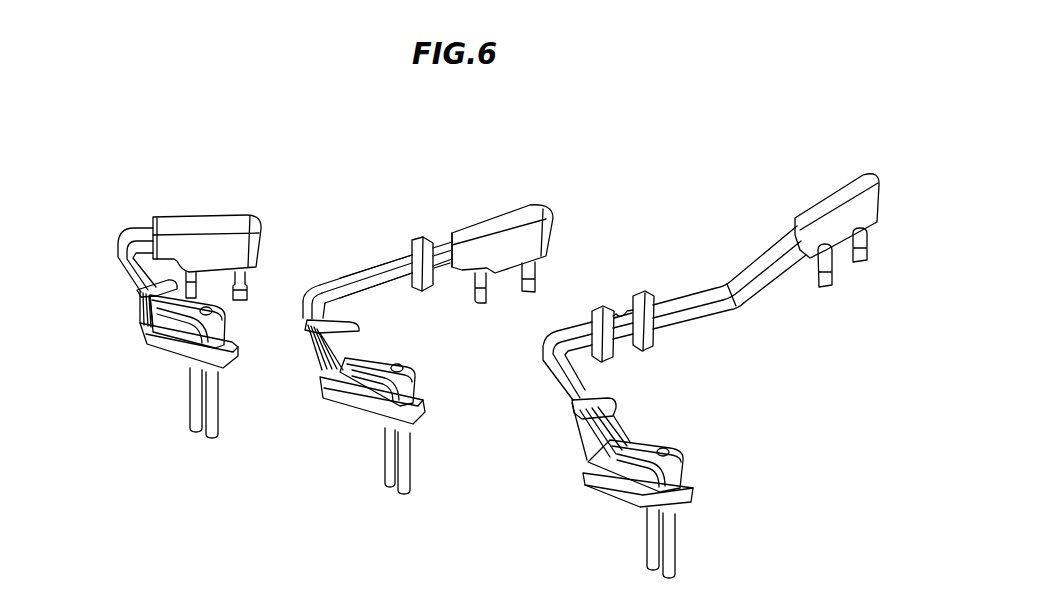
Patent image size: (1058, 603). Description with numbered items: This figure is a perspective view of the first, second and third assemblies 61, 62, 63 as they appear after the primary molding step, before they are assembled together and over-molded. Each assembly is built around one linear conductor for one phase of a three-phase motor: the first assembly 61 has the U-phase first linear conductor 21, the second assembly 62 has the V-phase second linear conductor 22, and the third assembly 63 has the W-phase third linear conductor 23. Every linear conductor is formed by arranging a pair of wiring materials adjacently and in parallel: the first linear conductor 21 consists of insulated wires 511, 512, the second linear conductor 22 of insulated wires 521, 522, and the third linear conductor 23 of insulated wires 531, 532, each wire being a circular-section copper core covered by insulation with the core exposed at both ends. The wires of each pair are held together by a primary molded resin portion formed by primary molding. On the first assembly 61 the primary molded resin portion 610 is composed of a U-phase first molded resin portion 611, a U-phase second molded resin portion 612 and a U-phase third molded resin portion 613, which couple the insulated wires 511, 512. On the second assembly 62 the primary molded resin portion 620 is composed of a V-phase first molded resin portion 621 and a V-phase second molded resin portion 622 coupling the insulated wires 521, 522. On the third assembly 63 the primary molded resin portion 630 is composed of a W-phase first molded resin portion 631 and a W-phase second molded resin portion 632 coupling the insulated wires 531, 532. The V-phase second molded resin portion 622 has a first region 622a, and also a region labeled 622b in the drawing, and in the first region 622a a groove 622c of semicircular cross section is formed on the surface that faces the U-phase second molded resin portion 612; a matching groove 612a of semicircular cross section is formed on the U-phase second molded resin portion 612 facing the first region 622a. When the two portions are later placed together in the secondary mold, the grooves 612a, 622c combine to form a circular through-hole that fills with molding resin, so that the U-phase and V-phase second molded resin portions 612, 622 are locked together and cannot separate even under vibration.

The first assembly 61 is at (838, 155).
The second assembly 62 is at (513, 188).
The third assembly 63 is at (172, 192).
The first linear conductor 21 is at (684, 201).
The second linear conductor 22 is at (481, 339).
The third linear conductor 23 is at (66, 273).
The insulated wire 511 is at (773, 250).
The insulated wire 512 is at (762, 277).
The insulated wire 521 is at (382, 272).
The insulated wire 522 is at (368, 290).
The insulated wire 531 is at (132, 263).
The insulated wire 532 is at (130, 287).
The primary molded resin portion 610 is at (871, 339).
The U-phase first molded resin portion 611 is at (693, 468).
The U-phase second molded resin portion 612 is at (653, 340).
The groove 612a is at (620, 308).
The U-phase third molded resin portion 613 is at (845, 228).
The primary molded resin portion 620 is at (337, 174).
The V-phase first molded resin portion 621 is at (340, 338).
The V-phase second molded resin portion 622 is at (388, 161).
The first region 622a is at (452, 243).
The resin block 622b is at (495, 222).
The groove 622c is at (444, 260).
The primary molded resin portion 630 is at (293, 408).
The W-phase first molded resin portion 631 is at (218, 317).
The W-phase second molded resin portion 632 is at (222, 258).